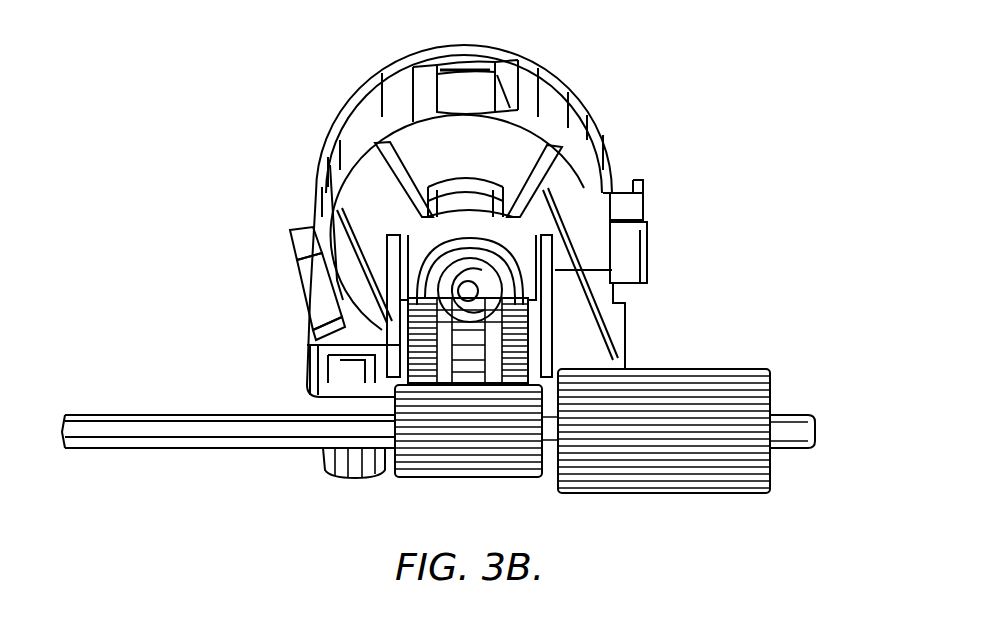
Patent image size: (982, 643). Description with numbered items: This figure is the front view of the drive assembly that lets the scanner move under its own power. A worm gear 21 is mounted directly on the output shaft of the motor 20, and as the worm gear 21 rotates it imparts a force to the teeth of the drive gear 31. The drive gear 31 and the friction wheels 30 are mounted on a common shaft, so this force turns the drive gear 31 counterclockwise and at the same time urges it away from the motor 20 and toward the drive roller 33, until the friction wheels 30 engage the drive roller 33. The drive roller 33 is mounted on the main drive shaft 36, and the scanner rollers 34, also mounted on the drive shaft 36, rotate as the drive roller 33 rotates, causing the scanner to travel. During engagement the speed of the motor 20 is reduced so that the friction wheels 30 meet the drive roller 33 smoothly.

The motor 20 is at (563, 112).
The worm gear 21 is at (492, 288).
The friction wheels 30 is at (403, 337).
The drive gear 31 is at (477, 358).
The drive roller 33 is at (517, 415).
The scanner rollers 34 is at (753, 369).
The main drive shaft 36 is at (787, 413).